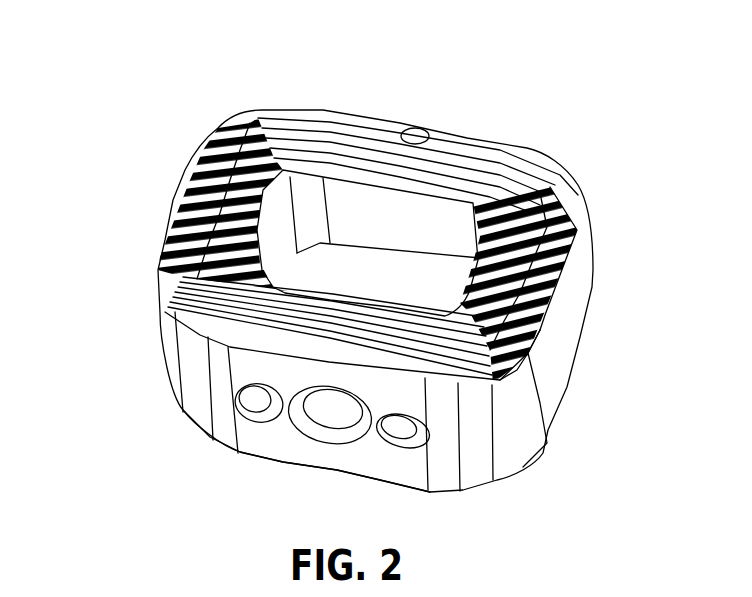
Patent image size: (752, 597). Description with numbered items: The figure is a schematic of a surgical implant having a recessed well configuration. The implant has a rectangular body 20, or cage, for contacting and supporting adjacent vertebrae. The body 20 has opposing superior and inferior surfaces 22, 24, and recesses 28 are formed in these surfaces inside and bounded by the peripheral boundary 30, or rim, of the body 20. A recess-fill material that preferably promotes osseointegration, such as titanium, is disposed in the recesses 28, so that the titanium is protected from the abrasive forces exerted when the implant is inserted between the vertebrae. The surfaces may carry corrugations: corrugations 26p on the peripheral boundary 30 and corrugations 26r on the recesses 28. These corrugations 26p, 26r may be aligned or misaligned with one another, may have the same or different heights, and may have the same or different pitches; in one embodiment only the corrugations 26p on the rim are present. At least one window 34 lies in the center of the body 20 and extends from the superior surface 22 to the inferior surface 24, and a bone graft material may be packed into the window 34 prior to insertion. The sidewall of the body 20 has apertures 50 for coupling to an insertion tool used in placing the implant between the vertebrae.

The body 20 is at (558, 352).
The superior surface 22 is at (540, 142).
The inferior surface 24 is at (202, 450).
The corrugations on the peripheral boundary 26p is at (208, 170).
The corrugations on the recesses 26r is at (243, 237).
The recesses 28 is at (278, 152).
The peripheral boundary 30 is at (323, 130).
The window 34 is at (398, 268).
The apertures 50 is at (338, 442).